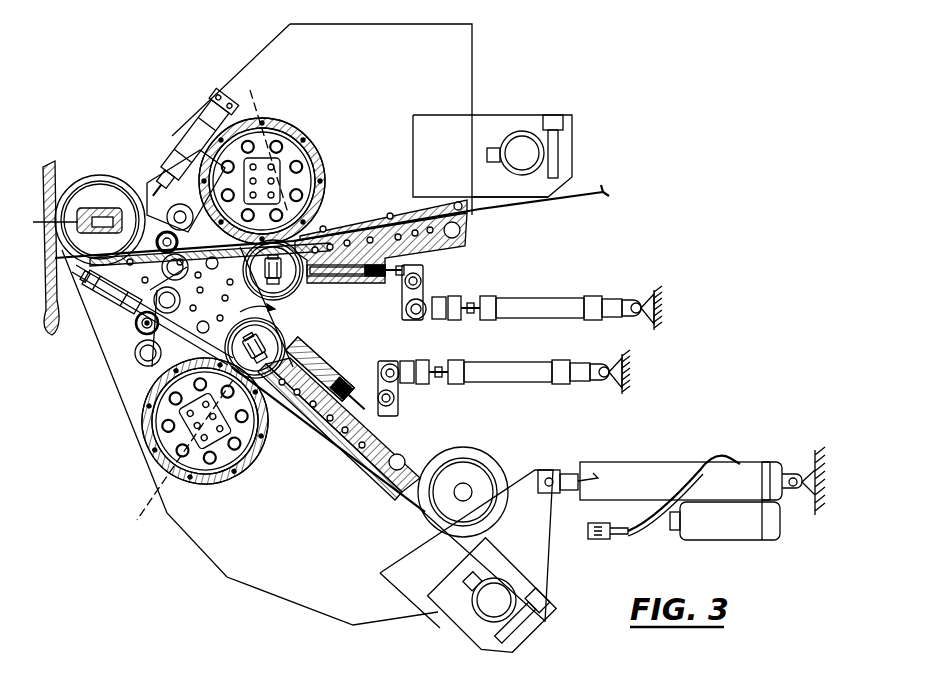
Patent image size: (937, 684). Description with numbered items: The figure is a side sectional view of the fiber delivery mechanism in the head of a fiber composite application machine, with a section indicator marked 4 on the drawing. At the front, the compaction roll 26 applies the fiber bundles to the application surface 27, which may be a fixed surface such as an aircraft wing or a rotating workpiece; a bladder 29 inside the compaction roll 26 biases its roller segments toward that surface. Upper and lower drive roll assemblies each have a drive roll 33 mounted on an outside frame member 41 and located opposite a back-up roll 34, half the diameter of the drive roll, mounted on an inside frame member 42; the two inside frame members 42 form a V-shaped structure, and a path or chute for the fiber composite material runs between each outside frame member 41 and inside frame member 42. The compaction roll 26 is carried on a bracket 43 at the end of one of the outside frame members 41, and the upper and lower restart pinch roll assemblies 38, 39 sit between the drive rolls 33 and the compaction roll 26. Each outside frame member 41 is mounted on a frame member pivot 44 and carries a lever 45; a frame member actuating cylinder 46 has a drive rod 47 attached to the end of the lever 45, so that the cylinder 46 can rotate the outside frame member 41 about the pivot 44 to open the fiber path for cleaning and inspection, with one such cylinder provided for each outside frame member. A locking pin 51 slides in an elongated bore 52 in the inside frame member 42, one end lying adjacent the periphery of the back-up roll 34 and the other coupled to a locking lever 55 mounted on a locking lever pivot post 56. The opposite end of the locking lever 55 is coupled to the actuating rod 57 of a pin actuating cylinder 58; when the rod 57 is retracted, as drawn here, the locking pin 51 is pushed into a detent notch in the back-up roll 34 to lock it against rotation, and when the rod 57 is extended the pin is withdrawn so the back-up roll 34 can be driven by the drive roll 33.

The section view indicator 4 is at (300, 290).
The compaction roll 26 is at (89, 203).
The application surface 27 is at (57, 258).
The bladder 29 is at (112, 188).
The drive roll 33 is at (298, 130).
The back-up roll 34 is at (283, 290).
The upper restart pinch roll assembly 38 is at (162, 218).
The lower restart pinch roll assembly 39 is at (130, 320).
The outside frame member 41 is at (356, 228).
The inside frame member 42 is at (450, 242).
The bracket 43 is at (137, 207).
The frame member pivot 44 is at (522, 155).
The lever 45 is at (540, 550).
The frame member actuating cylinder 46 is at (650, 472).
The drive rod 47 is at (566, 476).
The locking pin 51 is at (358, 278).
The elongated bore 52 is at (318, 380).
The locking lever 55 is at (422, 293).
The locking lever pivot post 56 is at (422, 278).
The actuating rod 57 is at (470, 304).
The pin actuating cylinder 58 is at (563, 298).